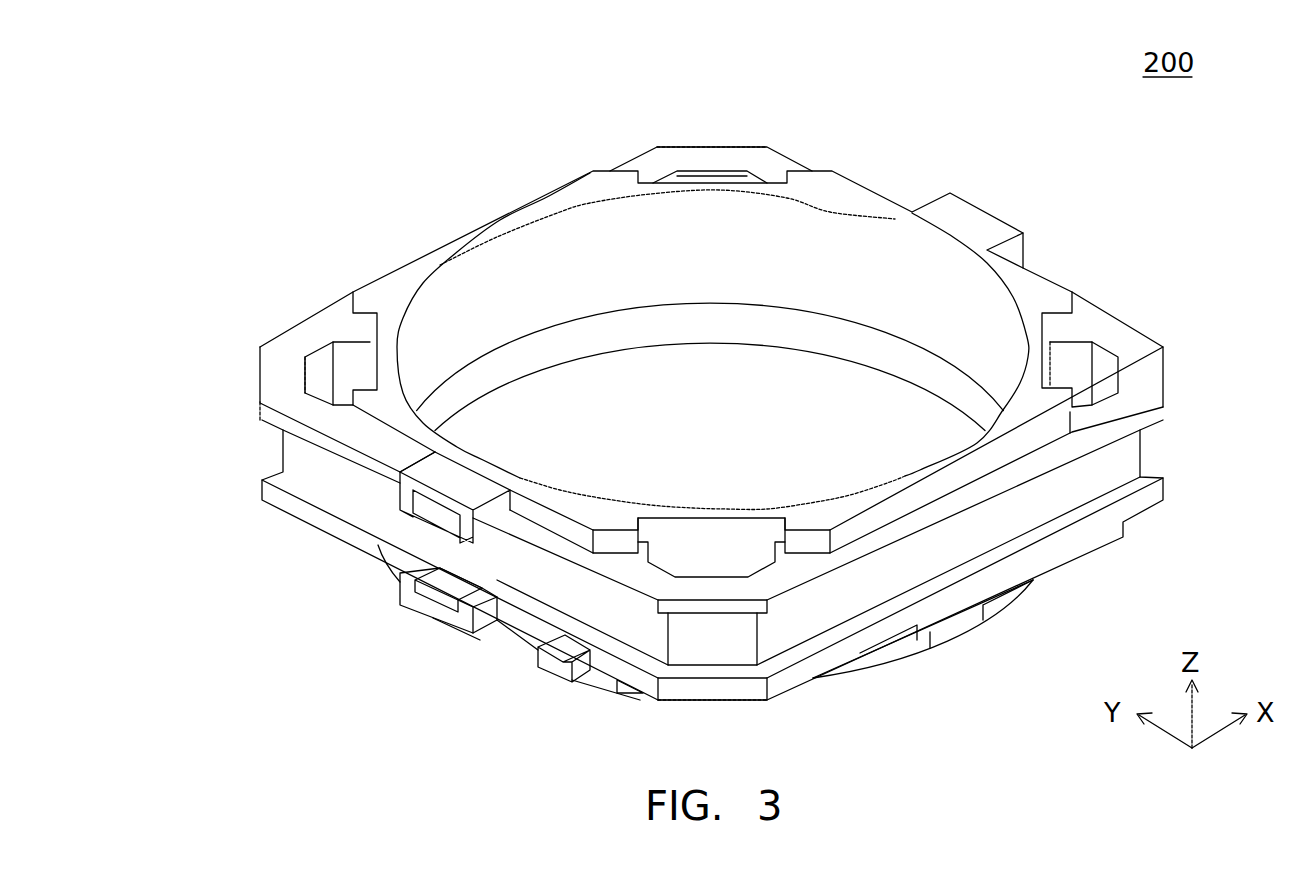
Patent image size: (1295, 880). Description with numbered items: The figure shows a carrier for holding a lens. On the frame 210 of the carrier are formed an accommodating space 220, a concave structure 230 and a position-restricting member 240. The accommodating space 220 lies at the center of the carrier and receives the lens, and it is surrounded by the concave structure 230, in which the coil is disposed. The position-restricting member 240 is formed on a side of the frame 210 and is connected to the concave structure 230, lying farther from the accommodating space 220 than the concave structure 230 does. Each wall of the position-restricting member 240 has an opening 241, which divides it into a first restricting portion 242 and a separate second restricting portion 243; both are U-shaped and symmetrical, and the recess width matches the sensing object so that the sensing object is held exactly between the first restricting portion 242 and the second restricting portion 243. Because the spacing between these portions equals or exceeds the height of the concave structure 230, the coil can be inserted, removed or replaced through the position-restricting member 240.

The frame 210 is at (1140, 360).
The accommodating space 220 is at (815, 400).
The concave structure 230 is at (302, 455).
The position-restricting member 240 is at (398, 598).
The opening 241 is at (437, 533).
The first restricting portion 242 is at (460, 480).
The second restricting portion 243 is at (418, 603).